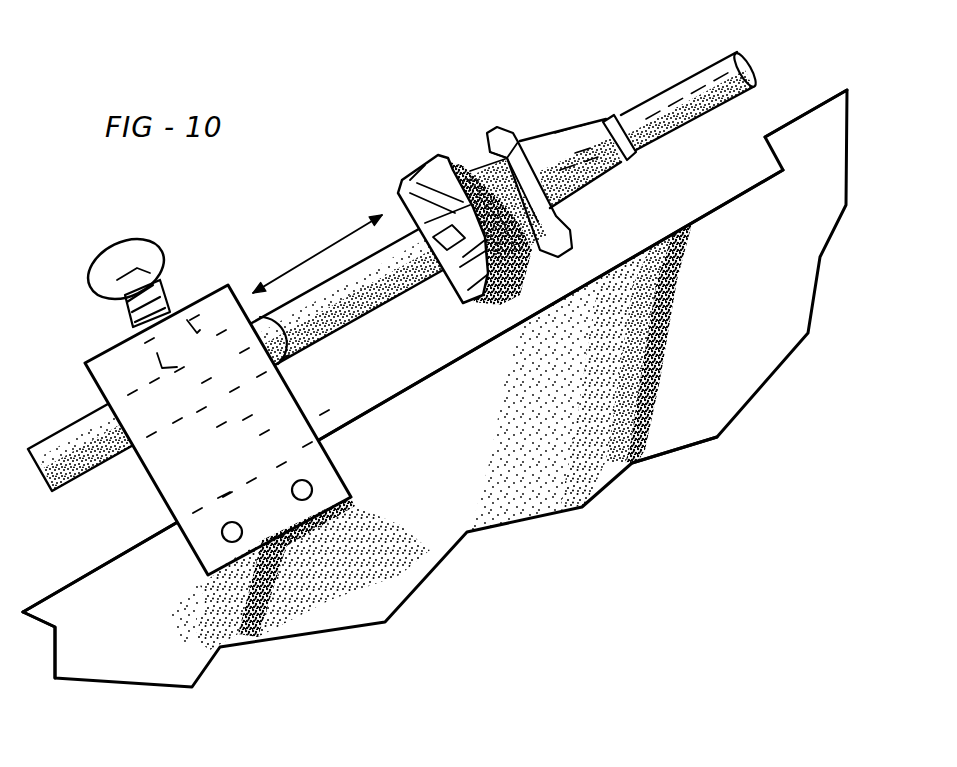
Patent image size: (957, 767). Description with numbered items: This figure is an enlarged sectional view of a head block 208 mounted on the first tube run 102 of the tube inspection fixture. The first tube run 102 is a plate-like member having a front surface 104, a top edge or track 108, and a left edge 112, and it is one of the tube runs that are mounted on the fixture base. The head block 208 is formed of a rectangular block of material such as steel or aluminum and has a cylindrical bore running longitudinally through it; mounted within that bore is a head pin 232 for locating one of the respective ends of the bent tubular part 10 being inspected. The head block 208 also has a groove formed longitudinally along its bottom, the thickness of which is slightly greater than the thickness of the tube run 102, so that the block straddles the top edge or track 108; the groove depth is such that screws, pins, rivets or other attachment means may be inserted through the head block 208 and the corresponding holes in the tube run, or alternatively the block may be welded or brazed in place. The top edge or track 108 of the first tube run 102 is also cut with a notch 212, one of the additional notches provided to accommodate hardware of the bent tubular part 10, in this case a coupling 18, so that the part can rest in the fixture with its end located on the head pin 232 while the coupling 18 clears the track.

The bent tubular part 10 is at (645, 102).
The coupling 18 is at (450, 157).
The first tube run 102 is at (757, 365).
The front surface 104 is at (672, 437).
The top edge or track 108 is at (818, 104).
The left edge 112 is at (34, 662).
The head block 208 is at (208, 308).
The notch 212 is at (718, 214).
The head pin 232 is at (80, 432).